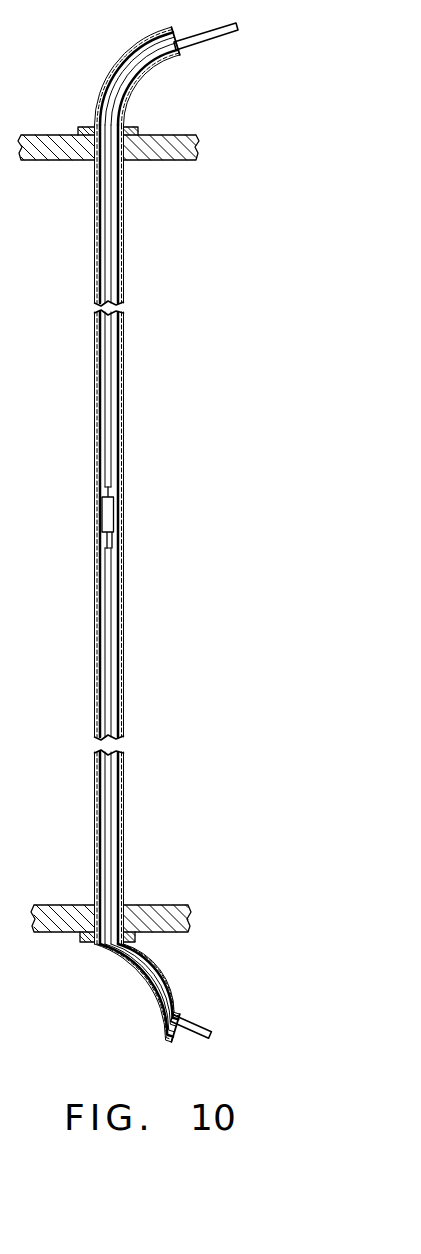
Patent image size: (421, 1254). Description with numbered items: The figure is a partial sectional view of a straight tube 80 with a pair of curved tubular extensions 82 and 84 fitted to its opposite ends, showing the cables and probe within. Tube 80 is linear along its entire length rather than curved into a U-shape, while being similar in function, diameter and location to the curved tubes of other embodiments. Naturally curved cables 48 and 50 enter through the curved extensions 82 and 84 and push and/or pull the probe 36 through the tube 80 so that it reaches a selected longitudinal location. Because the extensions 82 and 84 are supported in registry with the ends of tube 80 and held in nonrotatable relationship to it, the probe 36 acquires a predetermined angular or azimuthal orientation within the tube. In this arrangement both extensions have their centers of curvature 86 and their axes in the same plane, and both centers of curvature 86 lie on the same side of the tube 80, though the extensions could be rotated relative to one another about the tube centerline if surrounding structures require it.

The tube 80 is at (126, 401).
The curved tubular extension 84 is at (116, 62).
The curved tubular extension 82 is at (135, 1023).
The cable 50 is at (202, 36).
The cable 48 is at (205, 1028).
The probe 36 is at (113, 507).
The center of curvature 86 is at (175, 58).